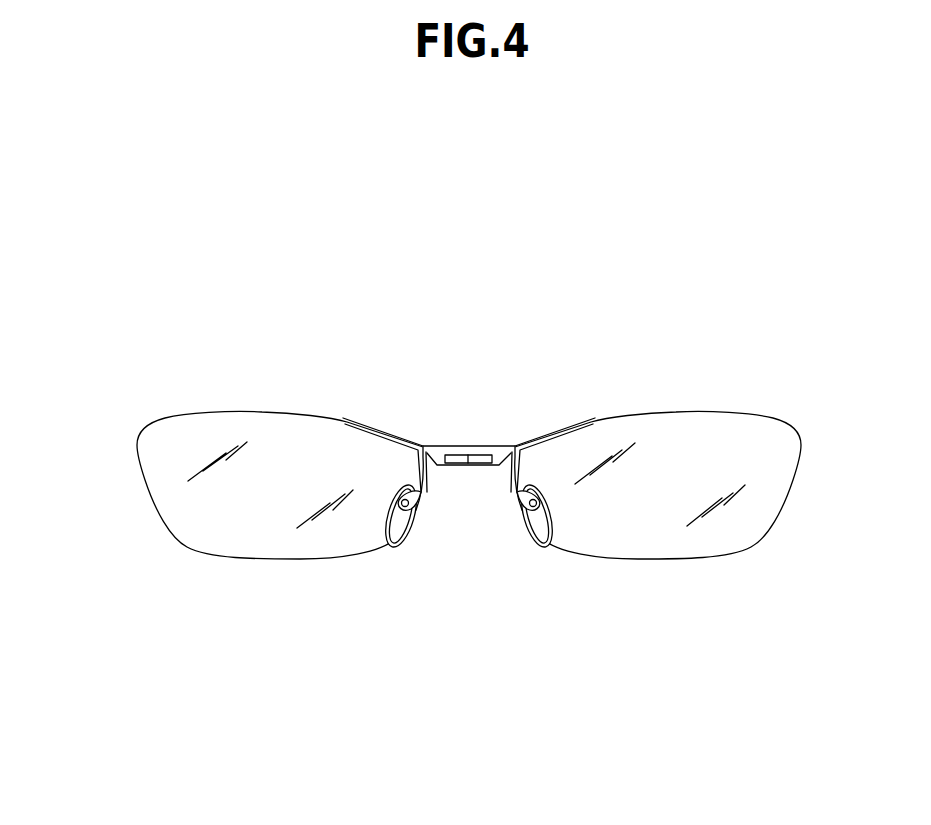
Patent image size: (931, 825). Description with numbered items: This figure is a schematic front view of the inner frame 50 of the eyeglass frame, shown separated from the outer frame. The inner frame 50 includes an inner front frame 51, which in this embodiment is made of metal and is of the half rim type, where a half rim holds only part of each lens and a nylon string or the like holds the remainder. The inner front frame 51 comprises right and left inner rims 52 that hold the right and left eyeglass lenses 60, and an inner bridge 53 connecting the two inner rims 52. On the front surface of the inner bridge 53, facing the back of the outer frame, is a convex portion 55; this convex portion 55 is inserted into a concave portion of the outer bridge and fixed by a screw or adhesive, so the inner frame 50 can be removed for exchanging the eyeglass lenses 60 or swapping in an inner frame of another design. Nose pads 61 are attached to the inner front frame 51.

The inner frame 50 is at (185, 325).
The inner front frame 51 is at (628, 323).
The inner rims 52 is at (555, 423).
The inner bridge 53 is at (480, 446).
The convex portion 55 is at (463, 466).
The eyeglass lenses 60 is at (263, 543).
The nose pads 61 is at (412, 548).